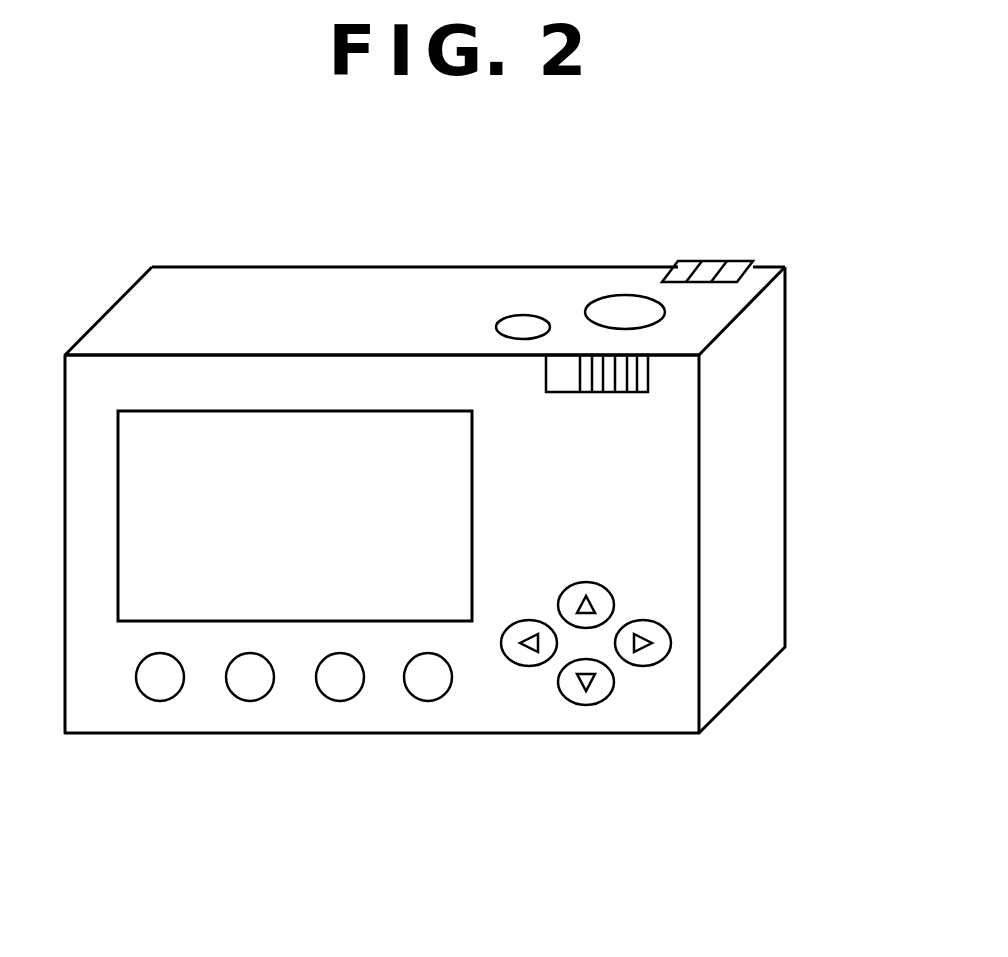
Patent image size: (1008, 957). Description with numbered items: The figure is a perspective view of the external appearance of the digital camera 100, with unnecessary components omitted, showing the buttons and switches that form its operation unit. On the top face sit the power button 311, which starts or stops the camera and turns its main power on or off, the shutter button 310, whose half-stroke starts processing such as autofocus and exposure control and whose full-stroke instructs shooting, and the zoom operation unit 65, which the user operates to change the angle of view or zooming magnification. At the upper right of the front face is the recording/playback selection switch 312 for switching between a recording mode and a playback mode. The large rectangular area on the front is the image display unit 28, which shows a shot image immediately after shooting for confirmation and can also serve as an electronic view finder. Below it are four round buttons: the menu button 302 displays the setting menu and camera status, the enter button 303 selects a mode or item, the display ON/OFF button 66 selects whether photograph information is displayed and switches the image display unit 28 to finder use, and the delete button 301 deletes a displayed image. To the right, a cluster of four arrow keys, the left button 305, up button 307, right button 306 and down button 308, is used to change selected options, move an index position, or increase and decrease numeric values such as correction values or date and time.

The digital camera 100 is at (267, 273).
The image display unit 28 is at (474, 457).
The power button 311 is at (523, 325).
The shutter button 310 is at (625, 308).
The zoom operation unit 65 is at (708, 268).
The recording/playback selection switch 312 is at (648, 373).
The menu button 302 is at (160, 683).
The enter button 303 is at (250, 683).
The display ON/OFF button 66 is at (340, 683).
The delete button 301 is at (428, 683).
The left button 305 is at (523, 627).
The up button 307 is at (602, 598).
The right button 306 is at (662, 643).
The down button 308 is at (583, 697).